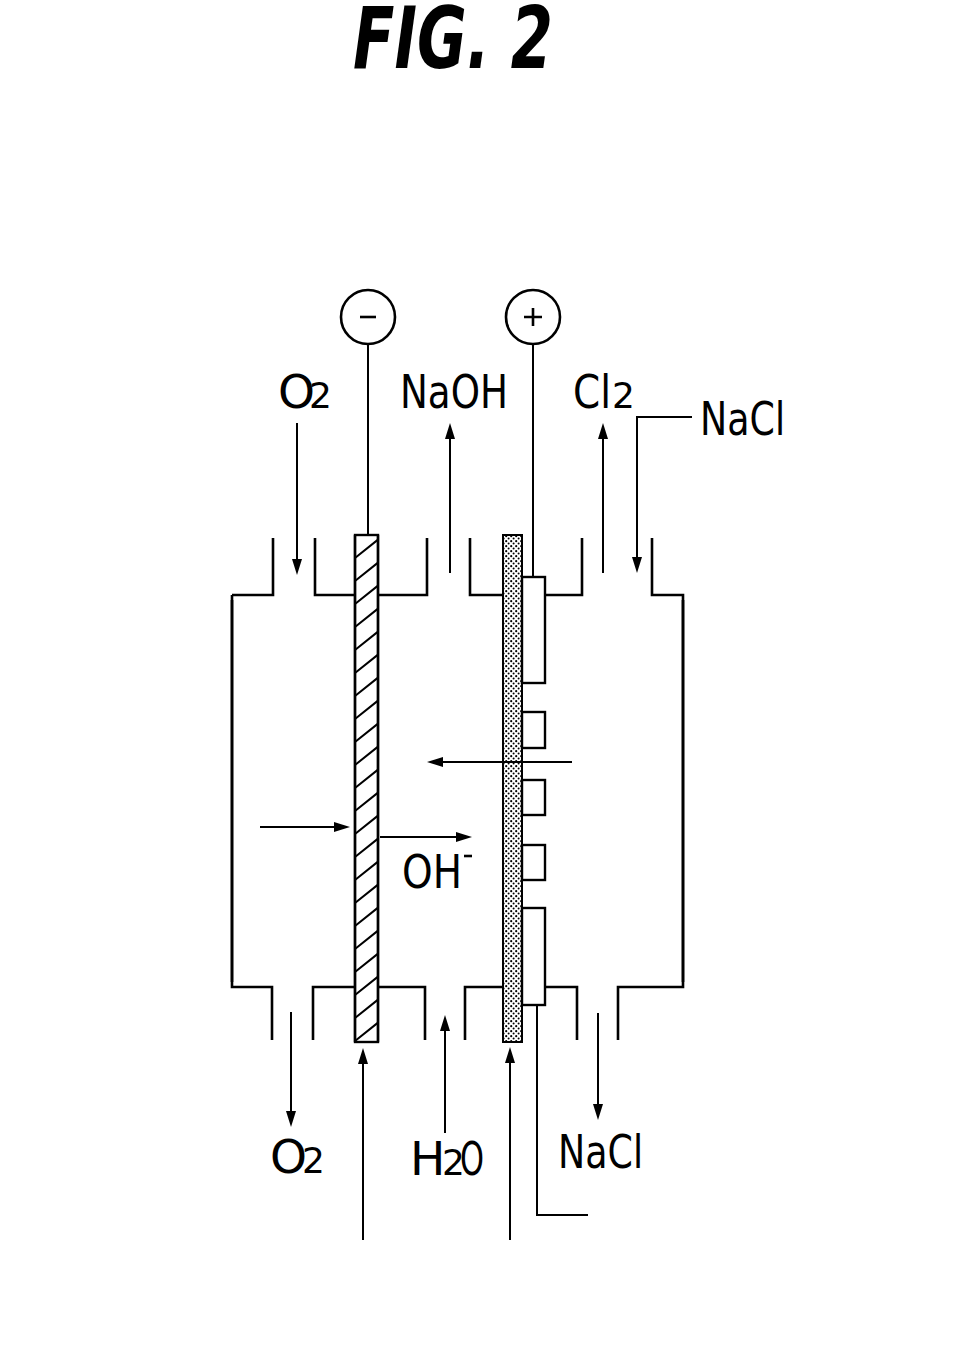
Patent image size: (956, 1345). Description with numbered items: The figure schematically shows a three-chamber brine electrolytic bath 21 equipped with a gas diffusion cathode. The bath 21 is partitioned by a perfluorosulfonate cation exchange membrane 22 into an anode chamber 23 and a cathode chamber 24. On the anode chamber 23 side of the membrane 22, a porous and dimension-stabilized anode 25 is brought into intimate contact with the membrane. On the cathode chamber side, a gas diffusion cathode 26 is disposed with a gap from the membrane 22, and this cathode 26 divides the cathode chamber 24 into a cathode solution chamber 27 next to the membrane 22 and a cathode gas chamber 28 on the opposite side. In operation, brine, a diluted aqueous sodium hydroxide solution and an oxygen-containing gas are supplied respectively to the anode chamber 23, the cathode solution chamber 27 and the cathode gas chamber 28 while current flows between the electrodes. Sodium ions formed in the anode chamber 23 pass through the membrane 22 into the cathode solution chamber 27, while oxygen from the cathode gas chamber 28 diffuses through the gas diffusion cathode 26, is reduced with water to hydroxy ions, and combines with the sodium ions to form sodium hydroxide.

The three-chamber electrolytic bath 21 is at (203, 610).
The perfluorosulfonate cation exchange membrane 22 is at (525, 645).
The anode chamber 23 is at (655, 700).
The cathode chamber 24 is at (403, 660).
The porous and dimension-stabilized anode 25 is at (537, 938).
The gas diffusion cathode 26 is at (360, 930).
The cathode solution chamber 27 is at (400, 733).
The cathode gas chamber 28 is at (250, 878).